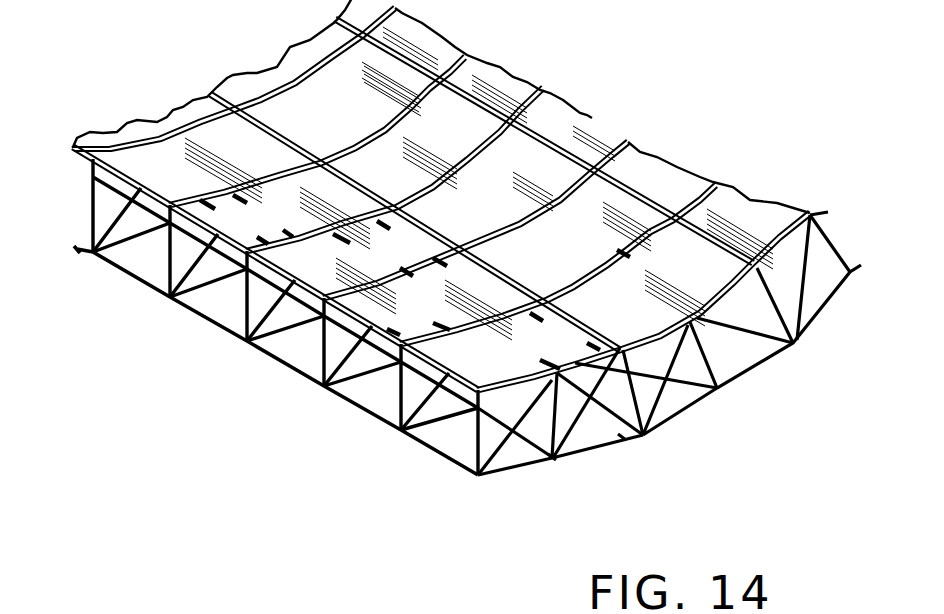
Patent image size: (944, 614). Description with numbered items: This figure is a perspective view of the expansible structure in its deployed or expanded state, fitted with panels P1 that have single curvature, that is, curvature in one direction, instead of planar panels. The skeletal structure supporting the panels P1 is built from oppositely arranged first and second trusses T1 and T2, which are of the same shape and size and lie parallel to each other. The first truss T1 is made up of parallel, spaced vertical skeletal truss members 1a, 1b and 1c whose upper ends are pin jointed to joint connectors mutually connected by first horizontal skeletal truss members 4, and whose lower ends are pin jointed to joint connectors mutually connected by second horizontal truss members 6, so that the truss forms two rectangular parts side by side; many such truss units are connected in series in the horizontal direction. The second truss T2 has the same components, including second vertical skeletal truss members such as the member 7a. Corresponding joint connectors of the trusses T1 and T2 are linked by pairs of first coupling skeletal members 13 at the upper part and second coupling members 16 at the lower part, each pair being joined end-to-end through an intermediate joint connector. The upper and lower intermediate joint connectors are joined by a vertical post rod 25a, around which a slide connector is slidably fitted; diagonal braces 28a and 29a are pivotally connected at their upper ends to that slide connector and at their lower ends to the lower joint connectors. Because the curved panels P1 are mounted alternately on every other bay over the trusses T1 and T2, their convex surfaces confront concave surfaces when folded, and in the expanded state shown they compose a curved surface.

The panel P1 is at (520, 327).
The first horizontal skeletal truss member 4 is at (383, 312).
The first coupling skeletal member 13 is at (597, 346).
The first vertical skeletal truss member 1a is at (462, 458).
The first vertical skeletal truss member 1b is at (396, 390).
The first vertical skeletal truss member 1c is at (314, 350).
The second horizontal truss member 6 is at (338, 398).
The first truss T1 is at (276, 343).
The second truss T2 is at (669, 386).
The second vertical skeletal truss member 7a is at (645, 432).
The second coupling member 16 is at (552, 457).
The vertical post rod 25a is at (562, 445).
The diagonal brace 28a is at (549, 448).
The diagonal brace 29a is at (644, 440).